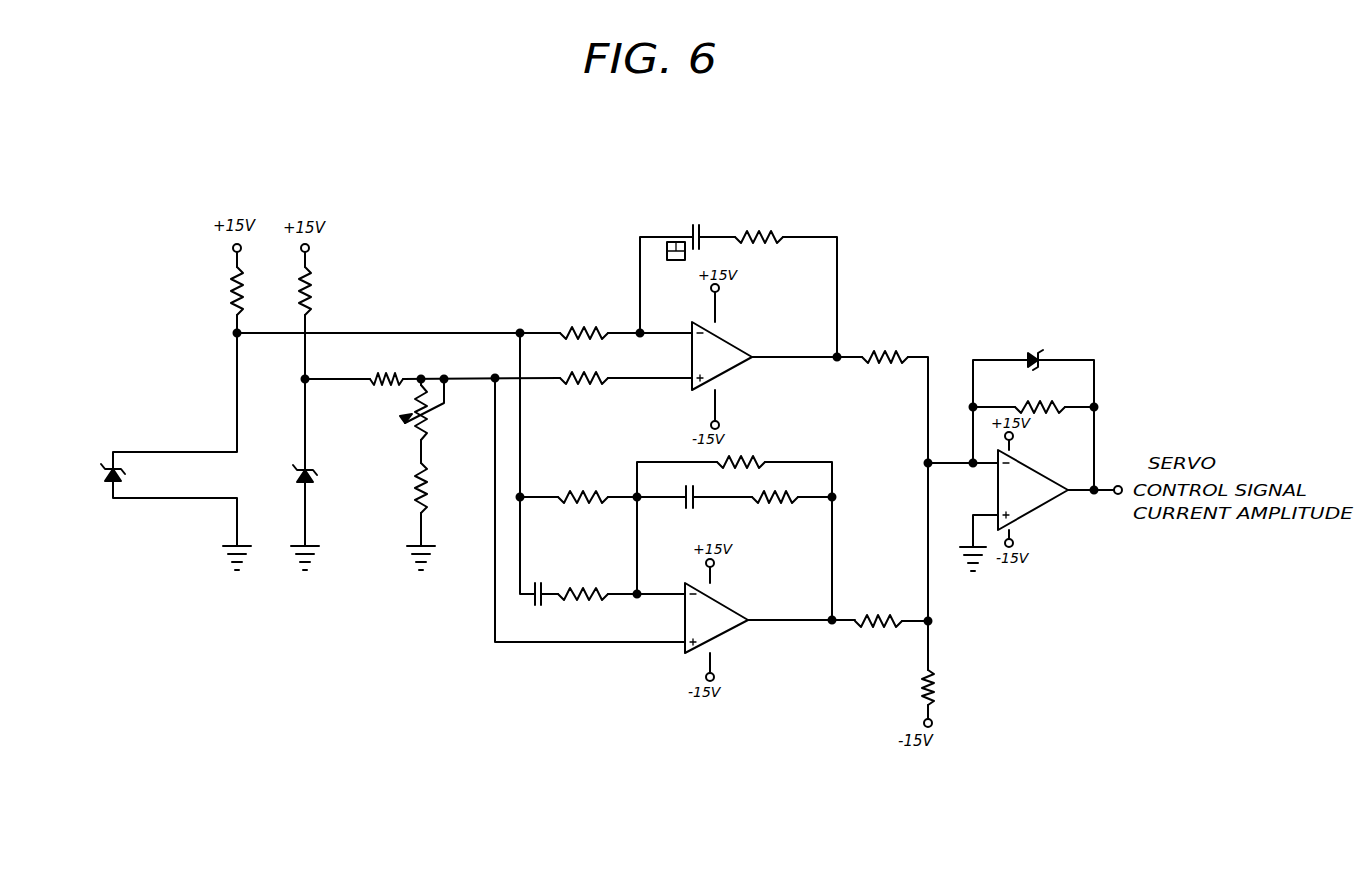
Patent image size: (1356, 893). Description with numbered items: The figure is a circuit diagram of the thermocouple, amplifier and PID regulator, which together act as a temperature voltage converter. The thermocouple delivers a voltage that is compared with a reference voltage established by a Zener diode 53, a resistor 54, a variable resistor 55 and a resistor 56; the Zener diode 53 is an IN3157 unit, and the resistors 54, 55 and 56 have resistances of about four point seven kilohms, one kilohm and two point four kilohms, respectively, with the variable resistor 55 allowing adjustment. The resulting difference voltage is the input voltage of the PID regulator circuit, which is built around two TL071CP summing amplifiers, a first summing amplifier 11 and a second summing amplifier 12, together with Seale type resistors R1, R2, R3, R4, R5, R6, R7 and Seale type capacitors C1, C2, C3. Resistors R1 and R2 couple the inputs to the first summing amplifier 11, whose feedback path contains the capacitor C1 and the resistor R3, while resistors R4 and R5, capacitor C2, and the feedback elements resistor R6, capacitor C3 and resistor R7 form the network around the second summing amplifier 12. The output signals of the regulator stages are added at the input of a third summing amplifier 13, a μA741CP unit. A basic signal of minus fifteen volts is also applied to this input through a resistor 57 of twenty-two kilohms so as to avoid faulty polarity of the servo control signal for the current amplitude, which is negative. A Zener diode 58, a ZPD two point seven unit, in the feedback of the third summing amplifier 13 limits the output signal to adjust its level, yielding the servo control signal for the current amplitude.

The Zener diode 53 is at (300, 478).
The resistor 54 is at (394, 372).
The variable resistor 55 is at (410, 432).
The resistor 56 is at (412, 498).
The resistor 57 is at (919, 681).
The Zener diode 58 is at (1034, 352).
The summing amplifier 11 is at (722, 356).
The summing amplifier 12 is at (716, 618).
The summing amplifier 13 is at (1033, 490).
The resistor R1 is at (594, 324).
The resistor R2 is at (584, 365).
The resistor R3 is at (779, 230).
The resistor R4 is at (591, 492).
The resistor R5 is at (592, 587).
The resistor R6 is at (748, 458).
The resistor R7 is at (781, 505).
The capacitor C1 is at (700, 224).
The capacitor C2 is at (546, 570).
The capacitor C3 is at (690, 491).